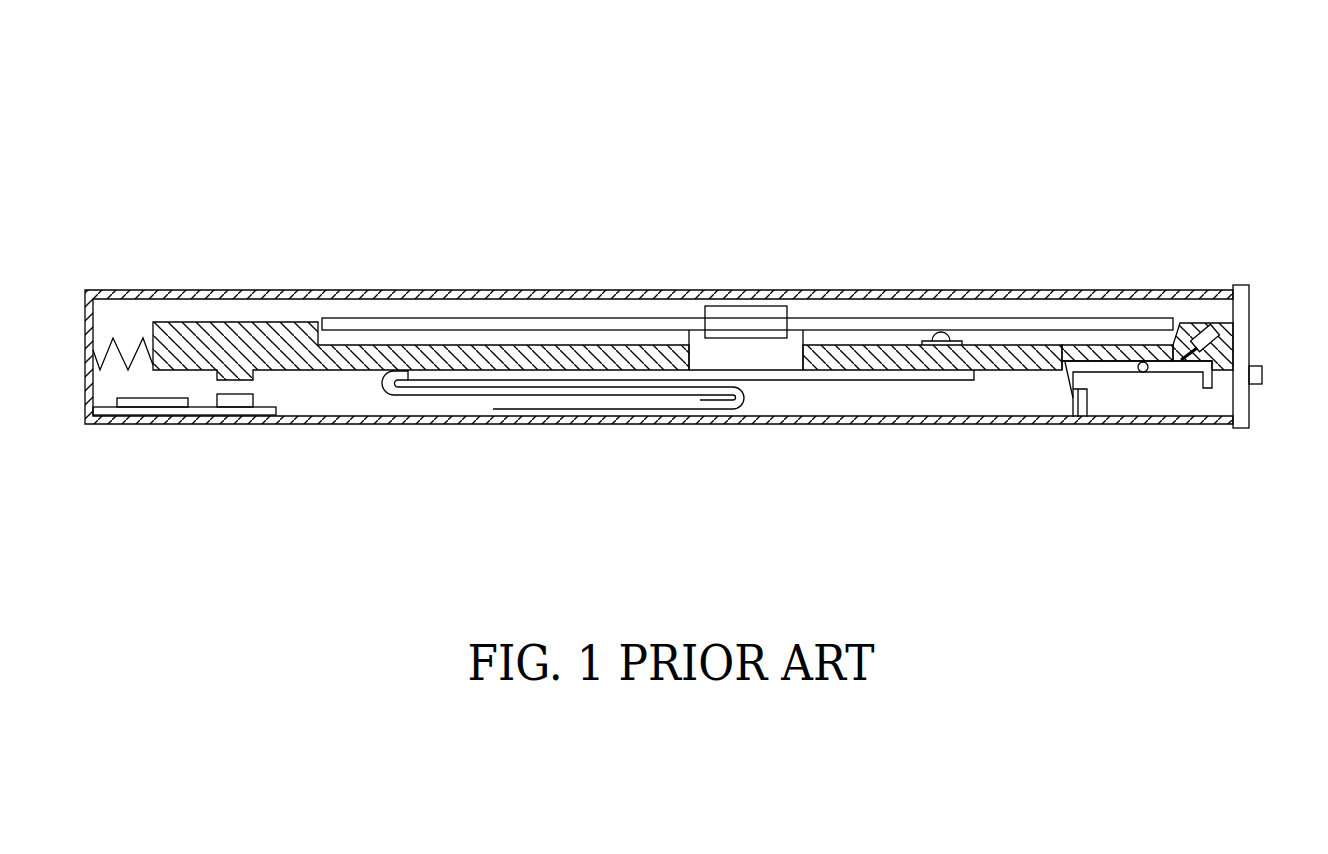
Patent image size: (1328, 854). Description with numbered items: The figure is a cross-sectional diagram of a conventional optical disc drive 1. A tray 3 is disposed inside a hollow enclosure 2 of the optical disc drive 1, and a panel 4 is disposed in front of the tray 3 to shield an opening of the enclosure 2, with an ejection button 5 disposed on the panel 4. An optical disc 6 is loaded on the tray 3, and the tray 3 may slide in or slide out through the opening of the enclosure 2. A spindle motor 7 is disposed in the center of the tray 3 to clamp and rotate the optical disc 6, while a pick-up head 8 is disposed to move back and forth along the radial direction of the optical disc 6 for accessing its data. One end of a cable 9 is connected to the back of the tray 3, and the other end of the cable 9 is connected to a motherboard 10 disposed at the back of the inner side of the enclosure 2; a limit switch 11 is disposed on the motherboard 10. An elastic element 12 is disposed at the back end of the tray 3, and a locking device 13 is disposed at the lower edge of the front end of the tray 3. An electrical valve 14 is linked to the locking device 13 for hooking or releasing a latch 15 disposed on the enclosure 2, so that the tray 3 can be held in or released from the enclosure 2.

The optical disc drive 1 is at (1035, 93).
The enclosure 2 is at (578, 290).
The tray 3 is at (230, 325).
The panel 4 is at (1248, 285).
The ejection button 5 is at (1262, 375).
The optical disc 6 is at (462, 318).
The spindle motor 7 is at (748, 318).
The pick-up head 8 is at (943, 333).
The cable 9 is at (745, 400).
The motherboard 10 is at (100, 425).
The limit switch 11 is at (215, 405).
The elastic element 12 is at (103, 340).
The locking device 13 is at (1175, 372).
The electrical valve 14 is at (1190, 322).
The latch 15 is at (1088, 398).